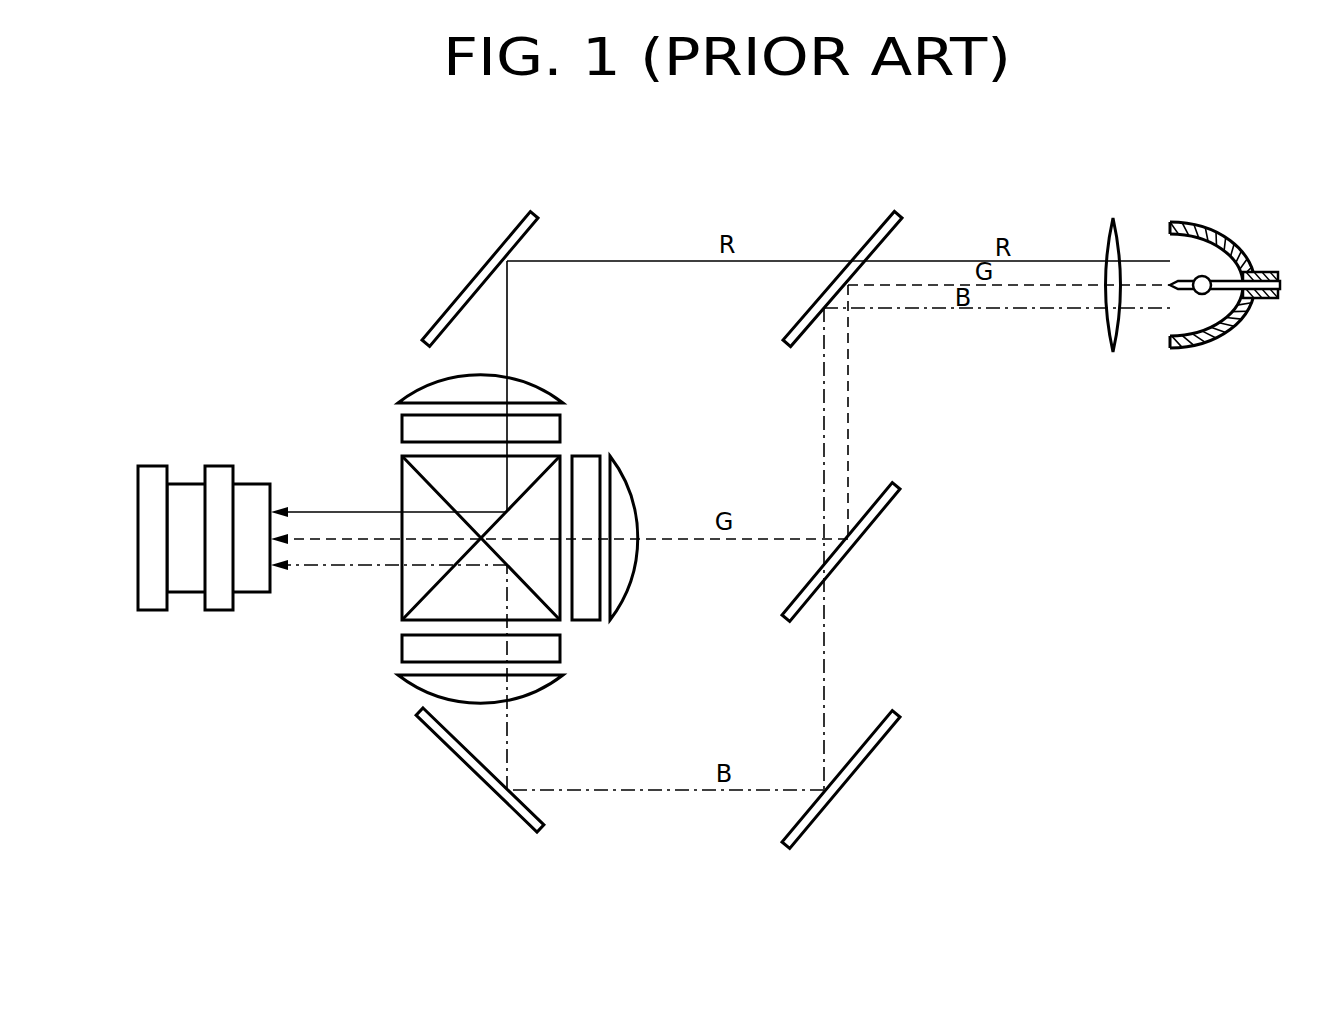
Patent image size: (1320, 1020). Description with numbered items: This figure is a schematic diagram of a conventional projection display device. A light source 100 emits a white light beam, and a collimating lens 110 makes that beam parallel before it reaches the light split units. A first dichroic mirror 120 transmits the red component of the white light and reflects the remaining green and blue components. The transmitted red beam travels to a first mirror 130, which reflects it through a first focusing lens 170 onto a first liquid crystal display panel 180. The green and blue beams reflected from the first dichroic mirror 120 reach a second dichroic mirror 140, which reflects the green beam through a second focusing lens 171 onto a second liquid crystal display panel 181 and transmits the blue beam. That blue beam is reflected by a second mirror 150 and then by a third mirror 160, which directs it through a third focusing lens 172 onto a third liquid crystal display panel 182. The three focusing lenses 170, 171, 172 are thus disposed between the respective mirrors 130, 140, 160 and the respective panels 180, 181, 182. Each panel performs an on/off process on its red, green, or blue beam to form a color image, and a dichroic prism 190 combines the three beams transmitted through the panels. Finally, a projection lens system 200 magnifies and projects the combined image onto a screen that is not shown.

The light source 100 is at (1228, 238).
The collimating lens 110 is at (1108, 240).
The first dichroic mirror 120 is at (878, 232).
The first mirror 130 is at (513, 242).
The second dichroic mirror 140 is at (880, 520).
The second mirror 150 is at (880, 745).
The third mirror 160 is at (434, 730).
The first focusing lens 170 is at (530, 390).
The second focusing lens 171 is at (625, 575).
The third focusing lens 172 is at (520, 694).
The first liquid crystal display panel 180 is at (552, 428).
The second liquid crystal display panel 181 is at (590, 622).
The third liquid crystal display panel 182 is at (402, 648).
The dichroic prism 190 is at (402, 460).
The projection lens system 200 is at (213, 465).